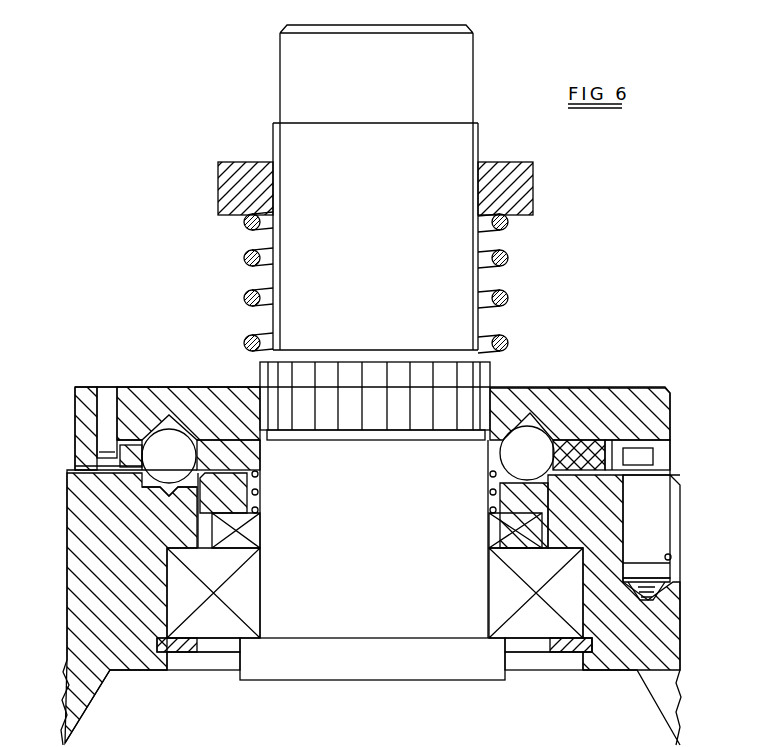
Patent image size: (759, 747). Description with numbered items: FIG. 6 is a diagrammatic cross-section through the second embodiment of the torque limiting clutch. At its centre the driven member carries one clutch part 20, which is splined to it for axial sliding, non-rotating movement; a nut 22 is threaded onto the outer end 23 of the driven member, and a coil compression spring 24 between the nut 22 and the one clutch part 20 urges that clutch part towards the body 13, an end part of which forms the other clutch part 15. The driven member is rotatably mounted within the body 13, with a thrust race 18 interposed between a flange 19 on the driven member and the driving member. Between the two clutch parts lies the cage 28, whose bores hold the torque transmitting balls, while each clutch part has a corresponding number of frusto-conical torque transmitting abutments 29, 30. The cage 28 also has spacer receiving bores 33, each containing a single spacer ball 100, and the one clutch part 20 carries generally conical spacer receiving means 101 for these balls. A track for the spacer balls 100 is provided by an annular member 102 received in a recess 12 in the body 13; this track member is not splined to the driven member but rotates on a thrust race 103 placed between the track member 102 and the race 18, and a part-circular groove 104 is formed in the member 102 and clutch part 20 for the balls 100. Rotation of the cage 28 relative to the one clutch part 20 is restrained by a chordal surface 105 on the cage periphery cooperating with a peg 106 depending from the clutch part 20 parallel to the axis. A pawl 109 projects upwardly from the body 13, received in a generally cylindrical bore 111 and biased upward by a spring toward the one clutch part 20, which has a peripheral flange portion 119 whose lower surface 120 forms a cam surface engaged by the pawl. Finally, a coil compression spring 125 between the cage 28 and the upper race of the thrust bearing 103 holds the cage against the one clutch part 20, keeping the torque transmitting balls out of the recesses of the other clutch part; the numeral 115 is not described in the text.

The recess 12 is at (179, 680).
The body 13 is at (607, 658).
The other clutch part 15 is at (658, 628).
The thrust race 18 is at (222, 625).
The flange 19 is at (405, 662).
The one clutch part 20 is at (78, 400).
The nut 22 is at (233, 167).
The outer end 23 is at (275, 137).
The coil compression spring 24 is at (244, 256).
The cage 28 is at (213, 452).
The torque transmitting abutment 29 is at (170, 495).
The torque transmitting abutment 30 is at (175, 425).
The spacer receiving bore 33 is at (585, 445).
The ball 100 is at (542, 442).
The spacer receiving means 101 is at (542, 413).
The annular member 102 is at (257, 502).
The thrust race 103 is at (248, 530).
The groove 104 is at (258, 470).
The chordal surface 105 is at (122, 452).
The peg 106 is at (108, 400).
The pawl 109 is at (646, 528).
The cylindrical bore 111 is at (671, 557).
The threaded bore 115 is at (647, 600).
The peripheral flange portion 119 is at (77, 472).
The lower surface 120 is at (92, 473).
The coil compression spring 125 is at (490, 490).